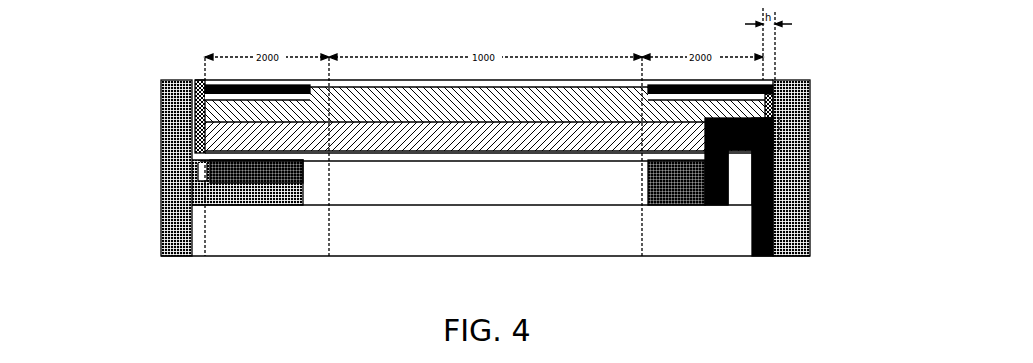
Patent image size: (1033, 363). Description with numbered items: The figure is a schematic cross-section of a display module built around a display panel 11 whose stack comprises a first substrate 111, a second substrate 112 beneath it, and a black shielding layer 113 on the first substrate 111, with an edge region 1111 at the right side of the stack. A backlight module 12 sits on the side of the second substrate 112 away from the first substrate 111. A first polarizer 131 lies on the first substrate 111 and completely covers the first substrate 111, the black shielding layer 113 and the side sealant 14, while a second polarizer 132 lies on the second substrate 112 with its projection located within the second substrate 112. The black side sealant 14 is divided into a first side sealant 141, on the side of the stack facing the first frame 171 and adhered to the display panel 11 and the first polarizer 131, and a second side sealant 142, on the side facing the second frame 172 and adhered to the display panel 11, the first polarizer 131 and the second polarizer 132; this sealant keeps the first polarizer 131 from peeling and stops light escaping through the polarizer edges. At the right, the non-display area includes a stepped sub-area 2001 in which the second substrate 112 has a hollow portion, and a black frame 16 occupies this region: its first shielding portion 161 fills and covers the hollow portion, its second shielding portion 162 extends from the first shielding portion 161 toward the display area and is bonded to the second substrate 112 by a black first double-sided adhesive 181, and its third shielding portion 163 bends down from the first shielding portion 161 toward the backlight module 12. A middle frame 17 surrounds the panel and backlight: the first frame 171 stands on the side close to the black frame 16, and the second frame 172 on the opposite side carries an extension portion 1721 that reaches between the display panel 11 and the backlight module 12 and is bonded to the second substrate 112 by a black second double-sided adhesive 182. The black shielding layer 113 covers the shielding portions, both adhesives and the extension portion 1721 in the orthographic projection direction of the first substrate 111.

The display panel 11 is at (406, 116).
The first substrate 111 is at (240, 102).
The second substrate 112 is at (240, 125).
The black shielding layer 113 is at (200, 87).
The edge portion of first layer 1111 is at (778, 93).
The backlight module 12 is at (477, 240).
The first polarizer 131 is at (200, 80).
The second polarizer 132 is at (200, 162).
The side sealant 14 is at (829, 158).
The first side sealant 141 is at (785, 80).
The second side sealant 142 is at (240, 155).
The black frame 16 is at (797, 209).
The first shielding portion 161 is at (797, 209).
The second shielding portion 162 is at (695, 207).
The third shielding portion 163 is at (765, 257).
The middle frame 17 is at (854, 213).
The first frame 171 is at (793, 218).
The second frame 172 is at (180, 242).
The extension portion 1721 is at (227, 193).
The first double-sided adhesive 181 is at (653, 207).
The second double-sided adhesive 182 is at (288, 188).
The stepped sub-area 2001 is at (779, 131).